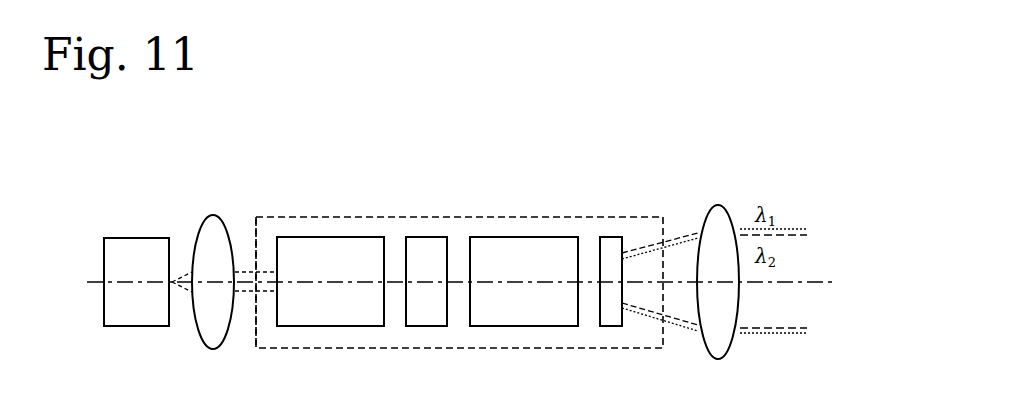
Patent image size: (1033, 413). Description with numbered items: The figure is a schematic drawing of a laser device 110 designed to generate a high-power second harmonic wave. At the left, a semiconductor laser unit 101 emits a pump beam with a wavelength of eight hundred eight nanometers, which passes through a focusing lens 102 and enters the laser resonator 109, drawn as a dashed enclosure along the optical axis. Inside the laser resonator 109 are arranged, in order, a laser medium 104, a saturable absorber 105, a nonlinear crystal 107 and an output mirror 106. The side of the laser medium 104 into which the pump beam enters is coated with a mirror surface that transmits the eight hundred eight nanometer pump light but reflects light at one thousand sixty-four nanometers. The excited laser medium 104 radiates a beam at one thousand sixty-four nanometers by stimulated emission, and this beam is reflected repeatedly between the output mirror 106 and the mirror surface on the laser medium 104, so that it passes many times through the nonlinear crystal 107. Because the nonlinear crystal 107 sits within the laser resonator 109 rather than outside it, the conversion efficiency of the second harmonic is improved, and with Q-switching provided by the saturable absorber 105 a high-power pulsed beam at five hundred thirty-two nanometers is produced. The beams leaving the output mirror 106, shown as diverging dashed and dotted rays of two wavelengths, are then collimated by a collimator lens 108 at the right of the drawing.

The semiconductor laser unit 101 is at (135, 253).
The focusing lens 102 is at (210, 232).
The laser medium 104 is at (335, 250).
The saturable absorber 105 is at (423, 248).
The output mirror 106 is at (611, 252).
The nonlinear crystal 107 is at (527, 250).
The collimator lens 108 is at (715, 222).
The laser resonator 109 is at (273, 216).
The laser device 110 is at (478, 178).